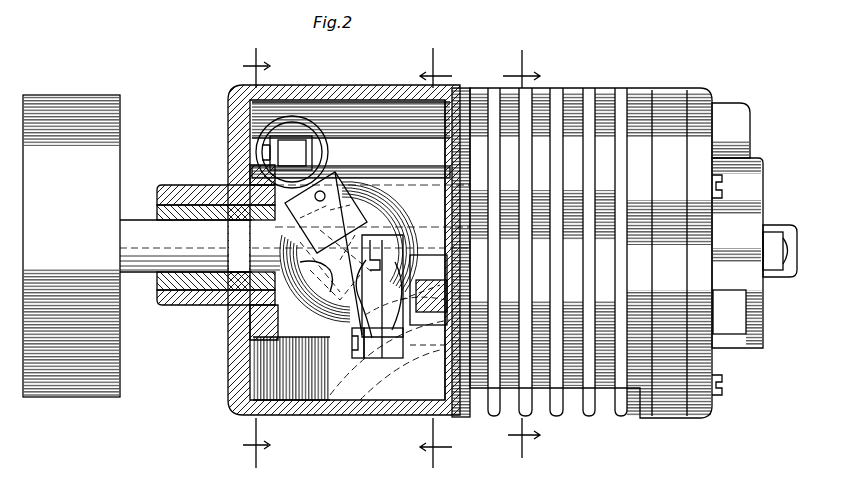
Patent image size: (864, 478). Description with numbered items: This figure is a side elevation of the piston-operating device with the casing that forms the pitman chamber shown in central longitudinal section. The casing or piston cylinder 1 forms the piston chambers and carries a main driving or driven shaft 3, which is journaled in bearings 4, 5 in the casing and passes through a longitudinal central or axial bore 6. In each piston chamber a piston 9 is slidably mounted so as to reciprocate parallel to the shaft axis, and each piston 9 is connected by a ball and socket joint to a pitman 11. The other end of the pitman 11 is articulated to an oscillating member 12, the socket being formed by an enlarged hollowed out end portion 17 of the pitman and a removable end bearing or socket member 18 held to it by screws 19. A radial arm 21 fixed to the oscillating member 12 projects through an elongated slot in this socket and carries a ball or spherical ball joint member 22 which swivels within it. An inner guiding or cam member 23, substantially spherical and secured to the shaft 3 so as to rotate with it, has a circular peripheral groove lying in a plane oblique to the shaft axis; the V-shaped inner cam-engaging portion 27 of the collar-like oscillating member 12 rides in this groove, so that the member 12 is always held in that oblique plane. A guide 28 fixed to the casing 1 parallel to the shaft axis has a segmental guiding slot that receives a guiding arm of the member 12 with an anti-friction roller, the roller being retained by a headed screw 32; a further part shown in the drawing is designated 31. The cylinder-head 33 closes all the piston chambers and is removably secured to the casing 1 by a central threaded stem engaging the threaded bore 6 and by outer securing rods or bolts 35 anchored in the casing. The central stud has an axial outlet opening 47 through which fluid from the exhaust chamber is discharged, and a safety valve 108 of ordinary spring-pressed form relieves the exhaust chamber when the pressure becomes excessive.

The casing or piston cylinder 1 is at (604, 96).
The main driving or driven shaft 3 is at (137, 232).
The bearing 4 is at (147, 287).
The bearing 5 is at (436, 263).
The longitudinal central or axial bore 6 is at (521, 262).
The piston 9 is at (320, 194).
The pitman 11 is at (361, 213).
The oscillating member 12 is at (344, 254).
The enlarged hollowed out end portion 17 is at (308, 130).
The removable end bearing or socket member 18 is at (288, 128).
The screws 19 is at (327, 232).
The radial arm 21 is at (272, 226).
The ball or spherical ball joint member 22 is at (216, 255).
The inner guiding or cam member 23 is at (410, 207).
The inner cam-engaging portion 27 is at (330, 310).
The guide 28 is at (347, 396).
The link 31 is at (412, 360).
The headed screw 32 is at (405, 372).
The cylinder-head 33 is at (714, 104).
The outer securing rods or bolts 35 is at (722, 385).
The axial outlet opening 47 is at (790, 228).
The safety valve 108 is at (798, 270).